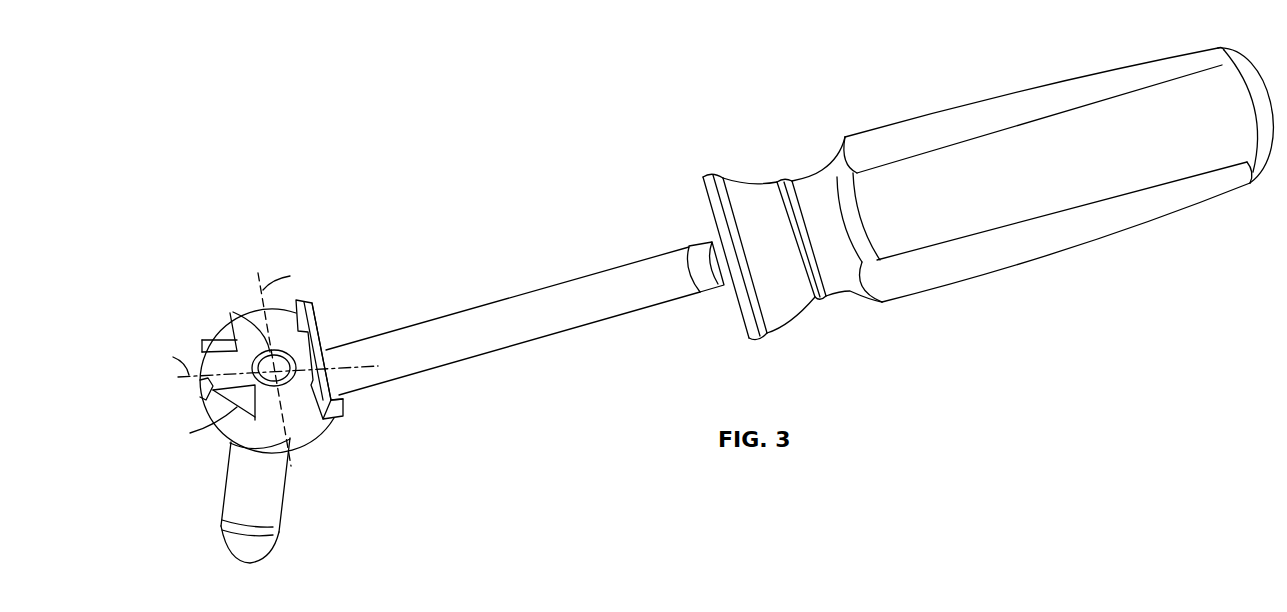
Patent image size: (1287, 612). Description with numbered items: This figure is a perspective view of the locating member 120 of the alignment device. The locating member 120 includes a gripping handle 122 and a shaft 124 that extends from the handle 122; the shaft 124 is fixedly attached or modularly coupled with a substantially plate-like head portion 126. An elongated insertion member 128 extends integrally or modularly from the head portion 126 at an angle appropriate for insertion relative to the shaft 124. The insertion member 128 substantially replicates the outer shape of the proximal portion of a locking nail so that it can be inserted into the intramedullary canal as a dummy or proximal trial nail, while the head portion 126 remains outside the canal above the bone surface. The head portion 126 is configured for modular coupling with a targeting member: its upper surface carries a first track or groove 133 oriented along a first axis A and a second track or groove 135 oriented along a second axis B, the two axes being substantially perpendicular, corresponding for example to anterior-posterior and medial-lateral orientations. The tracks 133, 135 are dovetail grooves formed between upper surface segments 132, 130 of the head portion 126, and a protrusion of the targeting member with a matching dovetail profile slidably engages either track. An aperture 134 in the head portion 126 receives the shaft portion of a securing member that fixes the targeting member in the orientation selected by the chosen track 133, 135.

The locating member 120 is at (636, 341).
The gripping handle 122 is at (1007, 262).
The shaft 124 is at (412, 376).
The head portion 126 is at (328, 425).
The insertion member 128 is at (240, 470).
The upper surface segment 130 is at (321, 334).
The upper surface segment 132 is at (222, 321).
The first track 133 is at (202, 389).
The aperture 134 is at (268, 366).
The second track 135 is at (241, 446).